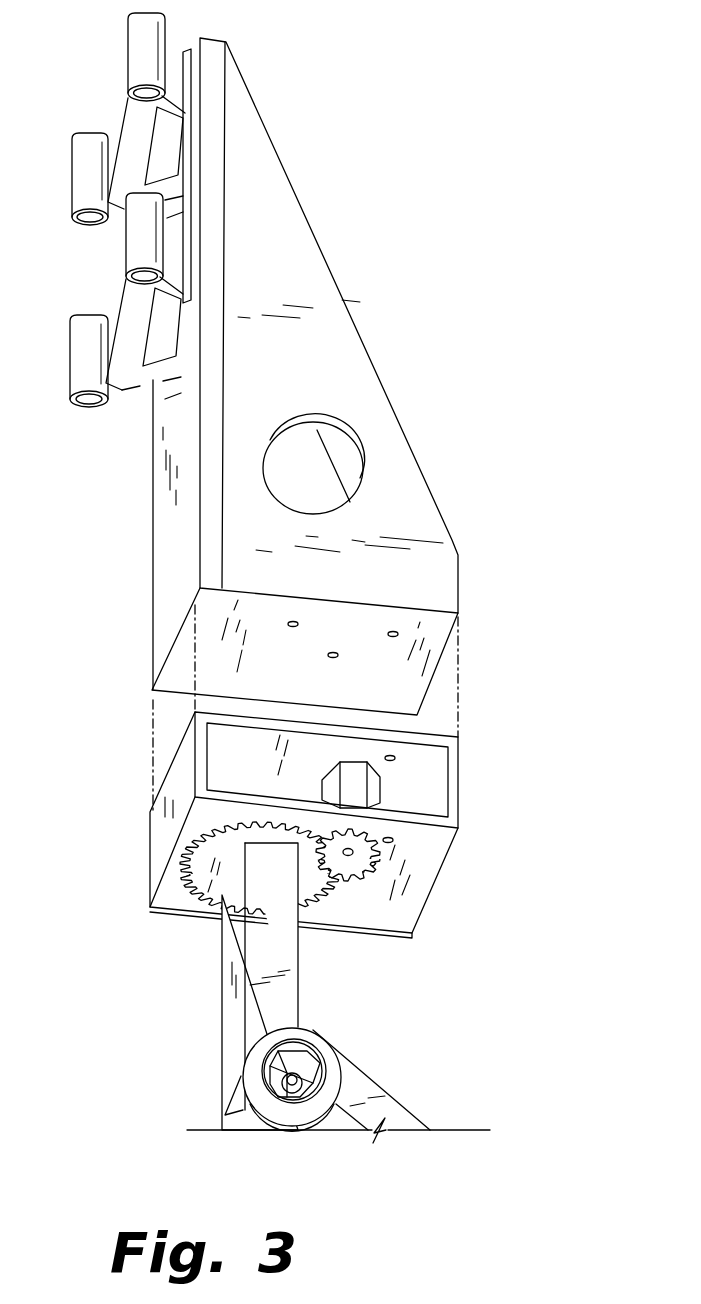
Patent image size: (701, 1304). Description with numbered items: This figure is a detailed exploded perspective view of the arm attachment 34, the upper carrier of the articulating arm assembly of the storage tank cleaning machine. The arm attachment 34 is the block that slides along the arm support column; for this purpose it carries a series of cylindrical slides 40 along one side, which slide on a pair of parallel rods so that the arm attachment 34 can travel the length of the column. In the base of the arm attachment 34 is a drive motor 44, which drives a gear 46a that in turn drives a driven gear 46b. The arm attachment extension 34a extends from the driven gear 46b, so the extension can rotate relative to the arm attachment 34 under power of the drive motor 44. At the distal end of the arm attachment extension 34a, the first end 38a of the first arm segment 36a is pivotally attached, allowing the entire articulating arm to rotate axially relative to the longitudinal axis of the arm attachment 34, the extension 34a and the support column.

The arm attachment 34 is at (322, 243).
The arm attachment extension 34a is at (221, 993).
The first arm segment 36a is at (378, 1073).
The first end 38a is at (316, 1030).
The cylindrical slides 40 is at (127, 46).
The drive motor 44 is at (380, 784).
The gear 46a is at (373, 860).
The driven gear 46b is at (185, 905).